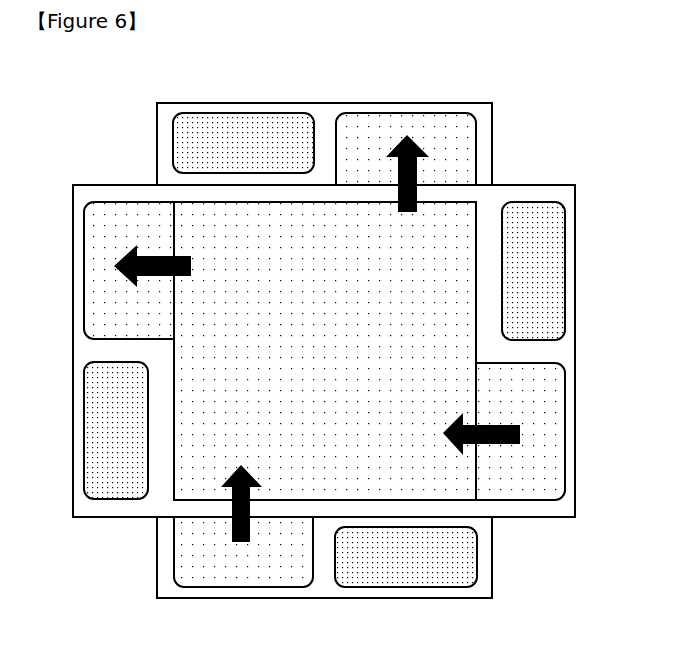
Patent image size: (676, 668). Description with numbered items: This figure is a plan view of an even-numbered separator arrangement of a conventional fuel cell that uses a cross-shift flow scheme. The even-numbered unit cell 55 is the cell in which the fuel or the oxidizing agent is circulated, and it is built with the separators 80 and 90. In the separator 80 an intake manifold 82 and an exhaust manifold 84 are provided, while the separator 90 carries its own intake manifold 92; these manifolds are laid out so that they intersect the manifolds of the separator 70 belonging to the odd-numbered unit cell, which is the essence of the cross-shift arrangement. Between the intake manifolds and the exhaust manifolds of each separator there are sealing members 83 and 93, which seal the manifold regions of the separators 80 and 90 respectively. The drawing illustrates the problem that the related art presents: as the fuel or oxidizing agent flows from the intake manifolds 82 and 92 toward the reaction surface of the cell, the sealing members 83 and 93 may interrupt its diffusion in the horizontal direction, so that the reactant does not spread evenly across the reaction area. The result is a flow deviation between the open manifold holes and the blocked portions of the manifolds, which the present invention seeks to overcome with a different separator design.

The even-numbered unit cell 55 is at (331, 360).
The separator 70 is at (157, 148).
The separator 80 is at (576, 253).
The intake manifold 82 is at (553, 434).
The sealing member 83 is at (110, 351).
The exhaust manifold 84 is at (110, 283).
The separator 90 is at (238, 103).
The intake manifold 92 is at (247, 572).
The sealing member 93 is at (323, 142).